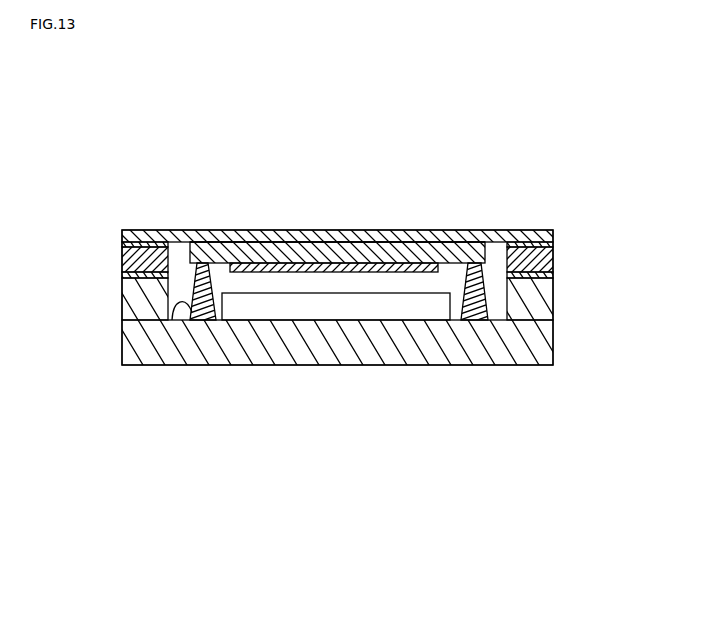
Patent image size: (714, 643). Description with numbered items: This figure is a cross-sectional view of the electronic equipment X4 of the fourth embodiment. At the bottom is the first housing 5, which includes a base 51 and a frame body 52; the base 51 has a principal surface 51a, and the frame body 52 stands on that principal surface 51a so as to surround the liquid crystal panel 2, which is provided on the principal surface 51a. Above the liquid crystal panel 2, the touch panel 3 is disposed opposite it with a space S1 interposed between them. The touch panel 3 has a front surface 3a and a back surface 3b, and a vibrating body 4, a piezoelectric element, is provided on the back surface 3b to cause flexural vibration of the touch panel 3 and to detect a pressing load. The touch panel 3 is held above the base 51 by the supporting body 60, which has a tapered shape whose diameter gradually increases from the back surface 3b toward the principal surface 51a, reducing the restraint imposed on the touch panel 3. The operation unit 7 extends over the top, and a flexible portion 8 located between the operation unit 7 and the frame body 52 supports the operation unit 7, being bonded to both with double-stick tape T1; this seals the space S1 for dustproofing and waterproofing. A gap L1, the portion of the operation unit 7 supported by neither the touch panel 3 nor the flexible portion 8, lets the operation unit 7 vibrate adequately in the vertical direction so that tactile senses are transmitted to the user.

The electronic equipment X4 is at (534, 66).
The operation unit 7 is at (250, 241).
The touch panel 3 is at (303, 257).
The front surface 3a is at (347, 241).
The back surface 3b is at (380, 272).
The liquid crystal panel 2 is at (323, 307).
The vibrating body 4 is at (360, 268).
The space S1 is at (423, 282).
The supporting body 60 is at (208, 262).
The flexible portion 8 is at (122, 267).
The double-stick tape T1 is at (122, 232).
The gap L1 is at (507, 247).
The frame body 52 is at (148, 298).
The base 51 is at (192, 355).
The principal surface 51a is at (182, 306).
The first housing 5 is at (124, 455).